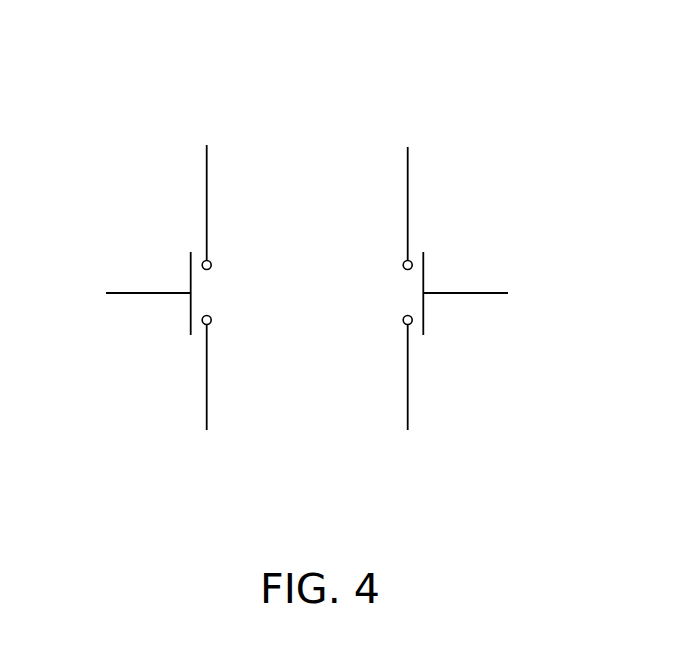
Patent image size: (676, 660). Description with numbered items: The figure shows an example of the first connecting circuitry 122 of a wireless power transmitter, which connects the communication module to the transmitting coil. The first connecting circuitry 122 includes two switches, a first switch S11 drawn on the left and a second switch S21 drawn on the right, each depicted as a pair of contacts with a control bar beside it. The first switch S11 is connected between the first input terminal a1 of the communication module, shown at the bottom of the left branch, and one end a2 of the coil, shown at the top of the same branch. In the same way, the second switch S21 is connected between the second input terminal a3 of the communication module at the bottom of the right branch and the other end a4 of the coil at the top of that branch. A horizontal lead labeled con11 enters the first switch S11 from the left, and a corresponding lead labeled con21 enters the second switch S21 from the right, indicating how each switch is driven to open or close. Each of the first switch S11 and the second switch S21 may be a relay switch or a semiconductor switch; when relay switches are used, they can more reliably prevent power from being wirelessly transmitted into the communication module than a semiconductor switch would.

The first connecting circuitry 122 is at (267, 68).
The first switch S11 is at (223, 293).
The second switch S21 is at (389, 293).
The first input terminal a1 is at (207, 399).
The one end of the coil a2 is at (207, 183).
The second input terminal a3 is at (406, 399).
The other end of the coil a4 is at (408, 183).
The first control signal con11 is at (112, 294).
The second control signal con21 is at (504, 294).